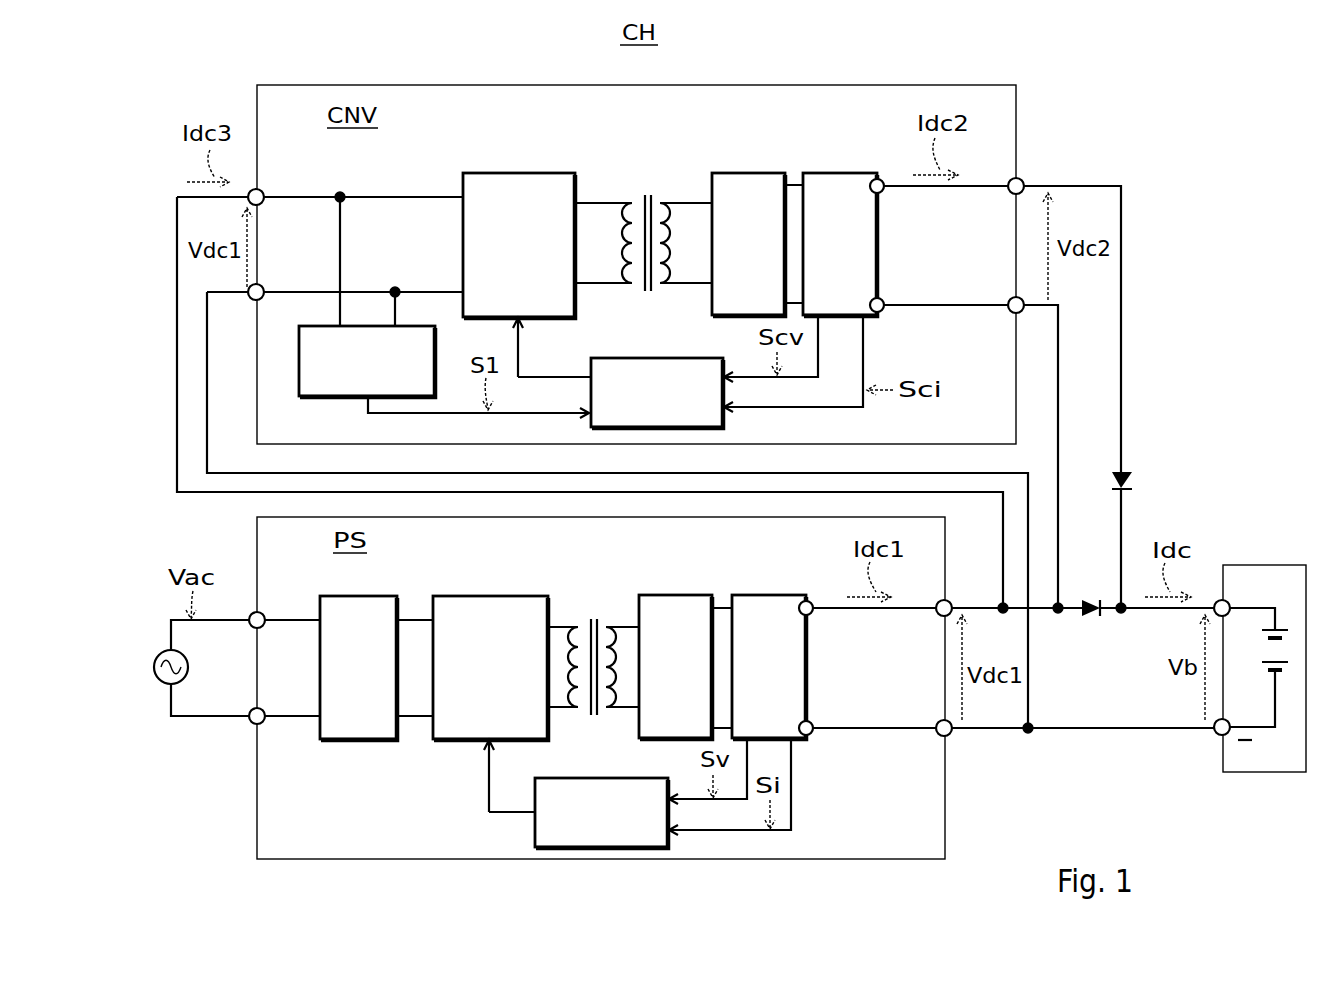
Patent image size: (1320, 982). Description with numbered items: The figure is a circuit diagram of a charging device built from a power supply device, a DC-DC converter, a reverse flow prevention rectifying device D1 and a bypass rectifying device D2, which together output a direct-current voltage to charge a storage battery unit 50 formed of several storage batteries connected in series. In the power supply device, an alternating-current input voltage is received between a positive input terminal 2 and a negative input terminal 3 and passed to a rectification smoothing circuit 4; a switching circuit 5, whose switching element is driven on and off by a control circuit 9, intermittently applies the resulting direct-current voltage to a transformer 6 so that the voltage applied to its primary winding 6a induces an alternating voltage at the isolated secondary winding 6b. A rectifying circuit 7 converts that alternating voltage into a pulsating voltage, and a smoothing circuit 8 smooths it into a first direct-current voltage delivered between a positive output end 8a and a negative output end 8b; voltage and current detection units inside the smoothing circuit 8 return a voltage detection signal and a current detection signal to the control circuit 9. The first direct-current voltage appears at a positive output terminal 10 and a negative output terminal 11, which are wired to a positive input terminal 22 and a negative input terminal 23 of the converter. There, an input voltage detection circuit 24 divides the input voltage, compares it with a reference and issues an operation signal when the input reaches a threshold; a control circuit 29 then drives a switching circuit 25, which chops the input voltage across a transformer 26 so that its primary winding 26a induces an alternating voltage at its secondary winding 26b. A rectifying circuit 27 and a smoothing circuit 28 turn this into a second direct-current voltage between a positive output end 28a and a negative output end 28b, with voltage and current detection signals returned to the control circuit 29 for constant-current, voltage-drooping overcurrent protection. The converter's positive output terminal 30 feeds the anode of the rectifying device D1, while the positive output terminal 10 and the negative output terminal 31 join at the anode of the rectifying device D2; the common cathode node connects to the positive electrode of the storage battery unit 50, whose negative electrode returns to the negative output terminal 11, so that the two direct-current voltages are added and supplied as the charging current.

The positive input terminal 2 is at (262, 612).
The negative input terminal 3 is at (262, 724).
The rectification smoothing circuit 4 is at (377, 596).
The switching circuit 5 is at (486, 596).
The transformer 6 is at (593, 632).
The primary winding 6a is at (574, 626).
The secondary winding 6b is at (594, 578).
The rectifying circuit 7 is at (676, 595).
The smoothing circuit 8 is at (771, 595).
The positive output end 8a is at (811, 615).
The negative output end 8b is at (828, 711).
The control circuit 9 is at (631, 778).
The positive output terminal 10 is at (941, 615).
The negative output terminal 11 is at (941, 721).
The positive input terminal 22 is at (258, 190).
The negative input terminal 23 is at (258, 285).
The input voltage detection circuit 24 is at (401, 328).
The switching circuit 25 is at (510, 173).
The transformer 26 is at (645, 200).
The primary winding 26a is at (628, 203).
The secondary winding 26b is at (666, 203).
The rectifying circuit 27 is at (750, 173).
The smoothing circuit 28 is at (842, 173).
The positive output end 28a is at (882, 192).
The negative output end 28b is at (902, 290).
The control circuit 29 is at (686, 358).
The positive output terminal 30 is at (1014, 194).
The negative output terminal 31 is at (1014, 297).
The storage battery unit 50 is at (1255, 565).
The reverse flow prevention rectifying device D1 is at (1132, 480).
The bypass rectifying device D2 is at (1090, 601).